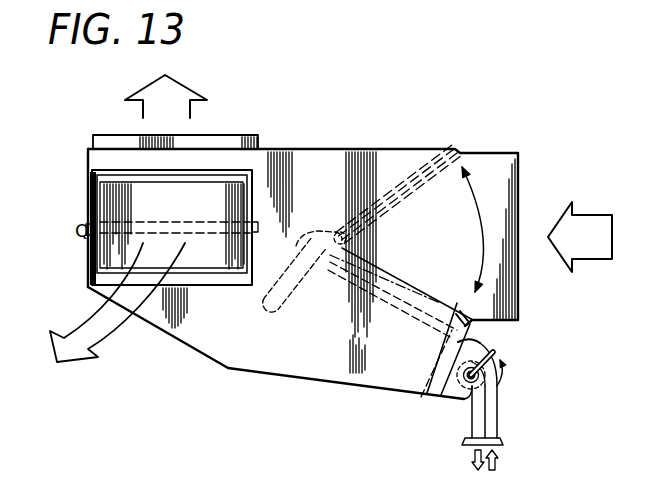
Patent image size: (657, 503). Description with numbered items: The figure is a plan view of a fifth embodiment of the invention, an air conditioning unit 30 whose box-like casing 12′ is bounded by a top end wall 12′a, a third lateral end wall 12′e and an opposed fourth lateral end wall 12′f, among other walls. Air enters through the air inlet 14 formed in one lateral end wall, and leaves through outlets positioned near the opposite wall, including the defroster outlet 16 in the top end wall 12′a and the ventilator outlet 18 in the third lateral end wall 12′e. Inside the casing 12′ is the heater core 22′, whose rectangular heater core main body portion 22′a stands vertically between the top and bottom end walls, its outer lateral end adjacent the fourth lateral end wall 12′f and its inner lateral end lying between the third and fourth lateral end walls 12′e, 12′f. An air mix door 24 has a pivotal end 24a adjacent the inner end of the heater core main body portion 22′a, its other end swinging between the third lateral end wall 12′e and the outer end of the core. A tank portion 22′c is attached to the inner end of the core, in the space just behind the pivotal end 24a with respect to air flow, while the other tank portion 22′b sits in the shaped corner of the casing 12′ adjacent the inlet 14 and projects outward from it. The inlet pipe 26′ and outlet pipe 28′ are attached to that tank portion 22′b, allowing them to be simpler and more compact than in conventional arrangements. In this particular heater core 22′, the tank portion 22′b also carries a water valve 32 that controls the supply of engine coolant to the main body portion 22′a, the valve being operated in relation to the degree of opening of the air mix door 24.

The air conditioning unit 30 is at (473, 120).
The casing 12′ is at (154, 336).
The top end wall 12′a is at (291, 376).
The third lateral end wall 12′e is at (320, 150).
The fourth lateral end wall 12′f is at (203, 353).
The air inlet 14 is at (520, 178).
The defroster outlet 16 is at (100, 201).
The ventilator outlet 18 is at (243, 137).
The heater core 22′ is at (393, 392).
The heater core main body portion 22′a is at (362, 368).
The tank portion 22′b is at (450, 379).
The tank portion 22′c is at (268, 306).
The air mix door 24 is at (419, 168).
The pivotal end 24a is at (341, 228).
The inlet pipe 26′ is at (498, 424).
The outlet pipe 28′ is at (470, 436).
The water valve 32 is at (489, 380).